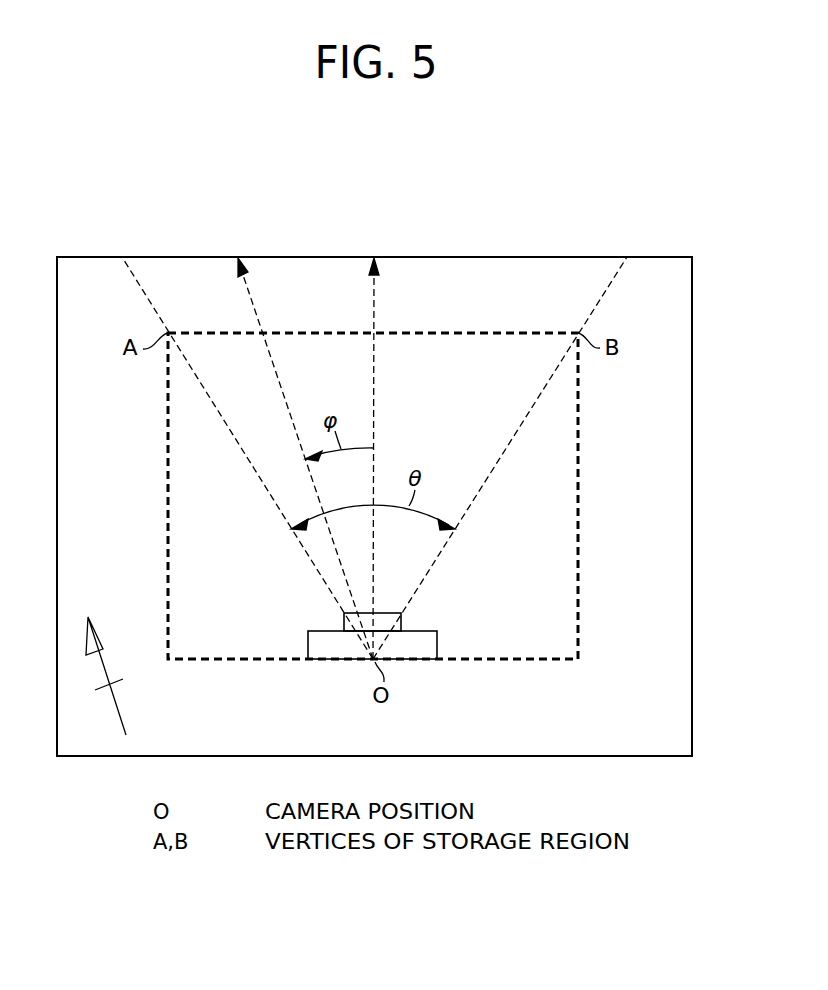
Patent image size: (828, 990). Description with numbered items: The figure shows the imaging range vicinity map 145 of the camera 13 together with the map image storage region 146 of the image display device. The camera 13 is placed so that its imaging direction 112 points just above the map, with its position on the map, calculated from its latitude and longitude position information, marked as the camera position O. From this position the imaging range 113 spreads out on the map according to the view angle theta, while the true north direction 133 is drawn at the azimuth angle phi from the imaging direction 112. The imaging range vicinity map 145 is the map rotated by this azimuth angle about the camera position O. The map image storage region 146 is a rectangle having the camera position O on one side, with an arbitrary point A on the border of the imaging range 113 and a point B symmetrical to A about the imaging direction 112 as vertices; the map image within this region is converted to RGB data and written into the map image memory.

The camera 13 is at (438, 648).
The imaging direction 112 is at (380, 306).
The imaging range 113 is at (517, 291).
The true north direction 133 is at (257, 319).
The imaging range vicinity map 145 is at (648, 291).
The map image storage region 146 is at (168, 621).